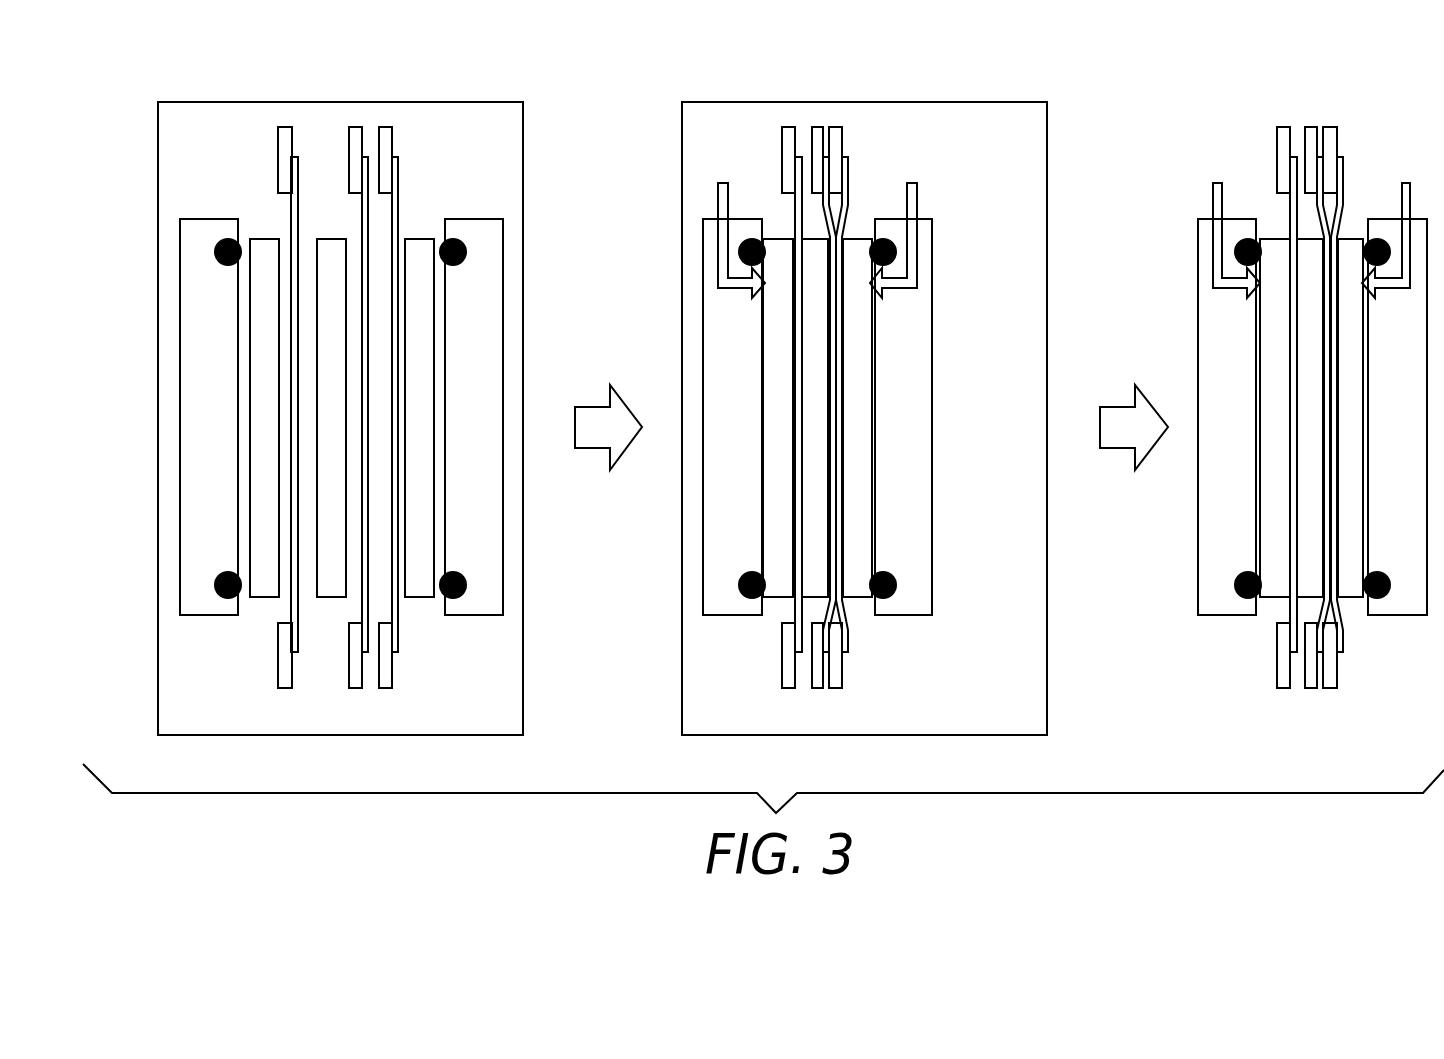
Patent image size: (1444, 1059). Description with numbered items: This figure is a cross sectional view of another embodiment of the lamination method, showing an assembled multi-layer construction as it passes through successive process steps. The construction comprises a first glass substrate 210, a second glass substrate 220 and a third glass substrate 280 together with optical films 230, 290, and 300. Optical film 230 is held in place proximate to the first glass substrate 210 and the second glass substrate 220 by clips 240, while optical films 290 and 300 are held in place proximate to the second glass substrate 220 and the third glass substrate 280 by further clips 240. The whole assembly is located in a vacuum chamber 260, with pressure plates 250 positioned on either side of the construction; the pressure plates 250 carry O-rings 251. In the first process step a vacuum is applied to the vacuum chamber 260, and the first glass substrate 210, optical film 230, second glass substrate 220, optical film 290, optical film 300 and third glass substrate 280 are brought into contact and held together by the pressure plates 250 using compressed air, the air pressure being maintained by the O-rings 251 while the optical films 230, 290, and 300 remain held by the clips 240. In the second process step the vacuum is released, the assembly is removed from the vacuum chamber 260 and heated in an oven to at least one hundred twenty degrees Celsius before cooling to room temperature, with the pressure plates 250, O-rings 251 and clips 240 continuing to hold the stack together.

The first glass substrate 210 is at (263, 598).
The second glass substrate 220 is at (335, 598).
The optical film 230 is at (291, 213).
The clips 240 is at (280, 128).
The pressure plates 250 is at (200, 430).
The O-rings 251 is at (215, 252).
The vacuum chamber 260 is at (500, 686).
The third glass substrate 280 is at (417, 598).
The optical film 290 is at (362, 214).
The optical film 300 is at (399, 213).